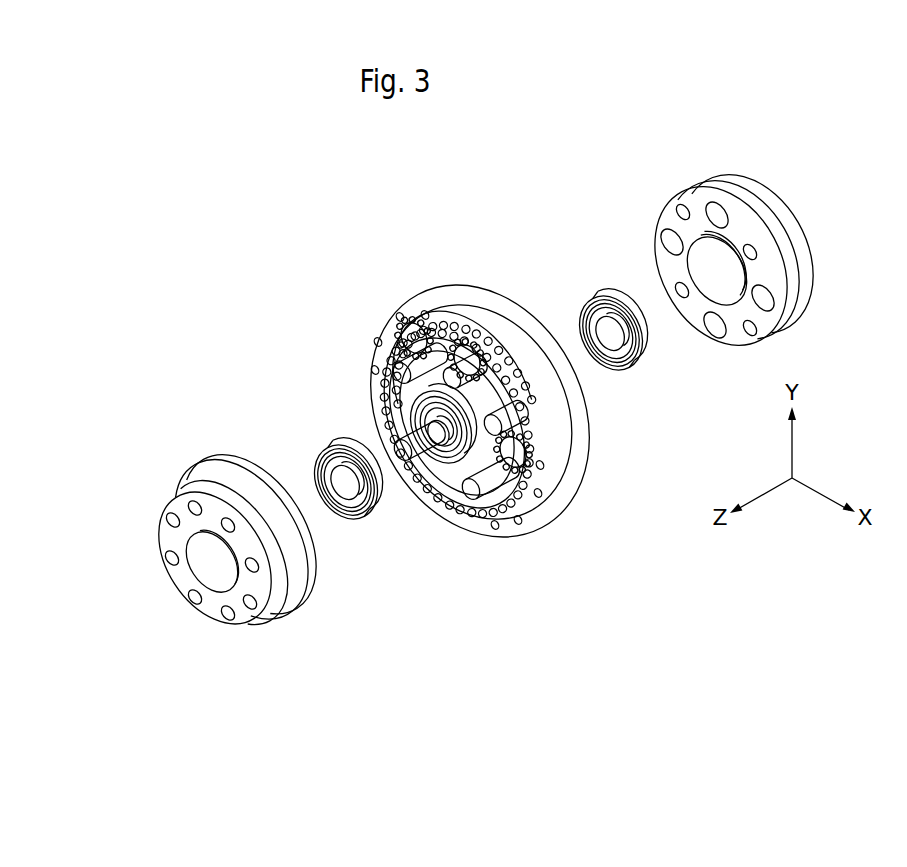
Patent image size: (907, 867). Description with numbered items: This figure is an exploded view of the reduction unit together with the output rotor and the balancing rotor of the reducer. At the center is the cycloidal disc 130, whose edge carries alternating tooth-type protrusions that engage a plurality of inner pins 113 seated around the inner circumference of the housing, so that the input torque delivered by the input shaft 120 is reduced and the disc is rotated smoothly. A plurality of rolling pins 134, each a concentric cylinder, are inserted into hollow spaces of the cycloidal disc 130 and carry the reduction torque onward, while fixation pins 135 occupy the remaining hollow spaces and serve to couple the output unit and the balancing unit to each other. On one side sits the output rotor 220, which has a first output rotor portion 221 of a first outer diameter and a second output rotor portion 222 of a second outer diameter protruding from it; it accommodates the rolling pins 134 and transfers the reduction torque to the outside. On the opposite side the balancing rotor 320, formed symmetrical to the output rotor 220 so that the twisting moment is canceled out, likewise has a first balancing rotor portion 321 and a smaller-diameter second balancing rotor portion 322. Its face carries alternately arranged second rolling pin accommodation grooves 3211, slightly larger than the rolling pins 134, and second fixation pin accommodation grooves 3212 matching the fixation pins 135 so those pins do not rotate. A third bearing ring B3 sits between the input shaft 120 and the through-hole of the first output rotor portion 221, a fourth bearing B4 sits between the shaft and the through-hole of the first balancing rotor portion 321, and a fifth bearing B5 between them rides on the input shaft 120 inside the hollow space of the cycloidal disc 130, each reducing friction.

The inner pin 113 is at (540, 443).
The input shaft 120 is at (423, 359).
The cycloidal disc 130 is at (459, 355).
The rolling pin 134 is at (468, 325).
The fixation pin 135 is at (400, 330).
The output rotor 220 is at (245, 536).
The first output rotor portion 221 is at (307, 598).
The second output rotor portion 222 is at (270, 610).
The balancing rotor 320 is at (730, 239).
The first balancing rotor portion 321 is at (745, 210).
The second balancing rotor portion 322 is at (783, 222).
The second rolling pin accommodation groove 3211 is at (717, 208).
The second fixation pin accommodation groove 3212 is at (678, 213).
The third bearing ring B3 is at (338, 450).
The fourth bearing B4 is at (600, 300).
The fifth bearing B5 is at (490, 345).